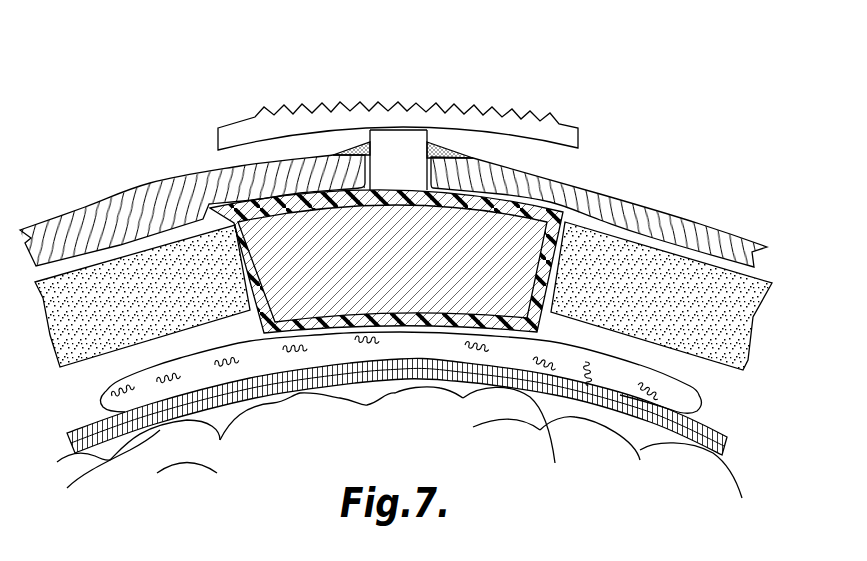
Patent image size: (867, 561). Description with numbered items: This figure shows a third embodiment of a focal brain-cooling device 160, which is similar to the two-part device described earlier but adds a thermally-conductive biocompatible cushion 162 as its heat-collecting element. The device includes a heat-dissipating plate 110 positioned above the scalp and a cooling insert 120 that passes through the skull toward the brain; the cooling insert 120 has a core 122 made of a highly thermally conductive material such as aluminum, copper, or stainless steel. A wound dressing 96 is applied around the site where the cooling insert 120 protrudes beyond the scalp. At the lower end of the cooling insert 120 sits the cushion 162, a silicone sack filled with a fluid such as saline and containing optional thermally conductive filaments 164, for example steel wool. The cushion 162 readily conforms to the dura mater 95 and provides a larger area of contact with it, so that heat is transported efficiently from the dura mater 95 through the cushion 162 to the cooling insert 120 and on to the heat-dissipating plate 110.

The heat-dissipating plate 110 is at (607, 128).
The brain-cooling device 160 is at (510, 100).
The wound dressing 96 is at (452, 146).
The cooling insert 120 is at (247, 338).
The core 122 is at (410, 267).
The dura mater 95 is at (733, 437).
The thermally-conductive biocompatible cushion 162 is at (713, 387).
The thermally conductive filaments 164 is at (697, 408).